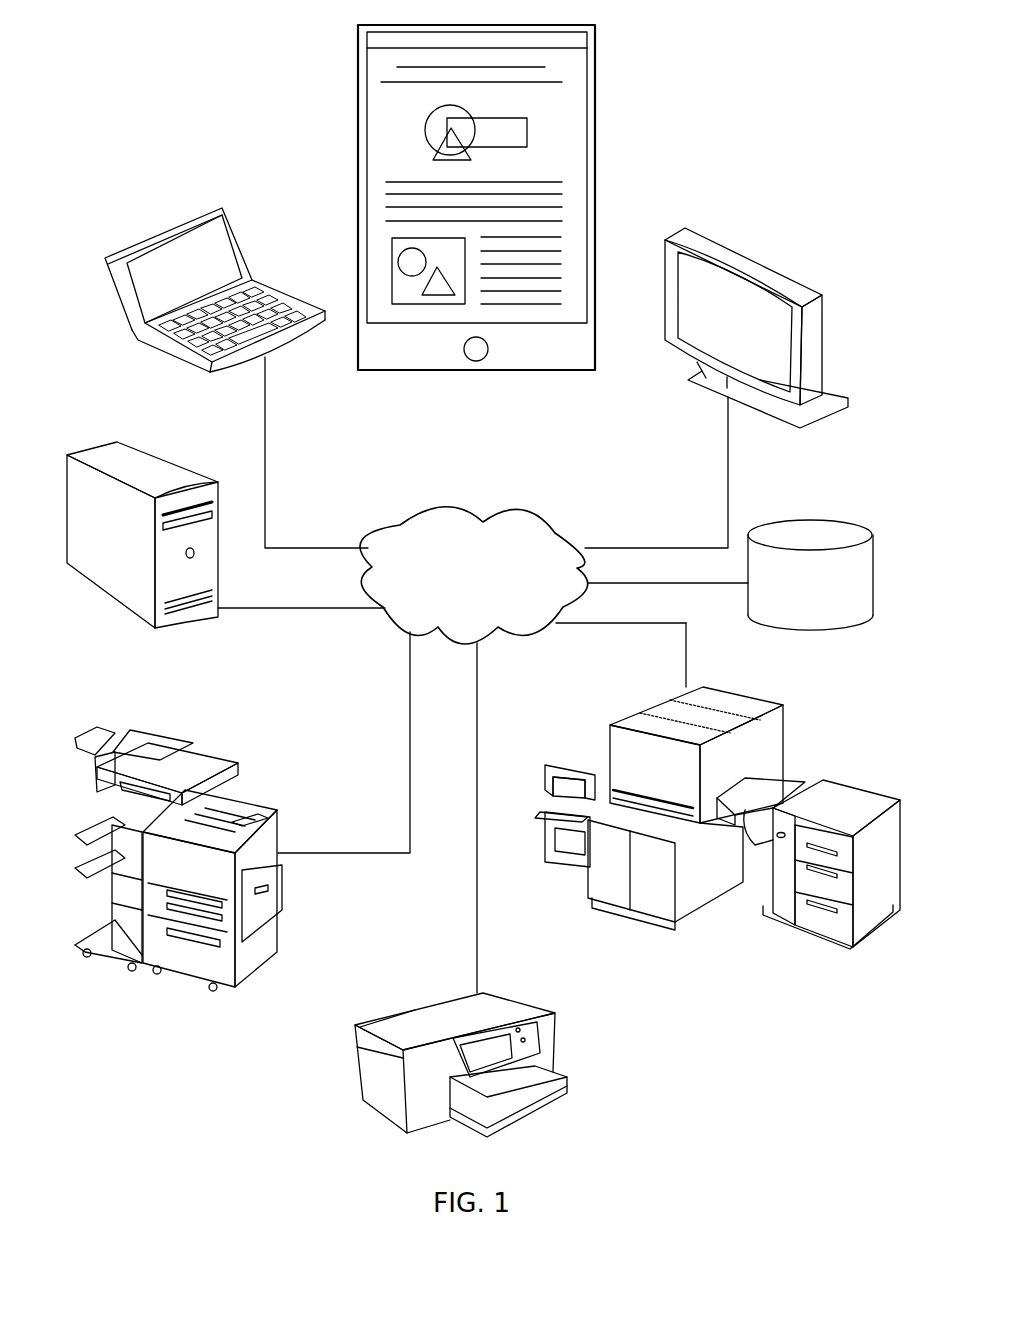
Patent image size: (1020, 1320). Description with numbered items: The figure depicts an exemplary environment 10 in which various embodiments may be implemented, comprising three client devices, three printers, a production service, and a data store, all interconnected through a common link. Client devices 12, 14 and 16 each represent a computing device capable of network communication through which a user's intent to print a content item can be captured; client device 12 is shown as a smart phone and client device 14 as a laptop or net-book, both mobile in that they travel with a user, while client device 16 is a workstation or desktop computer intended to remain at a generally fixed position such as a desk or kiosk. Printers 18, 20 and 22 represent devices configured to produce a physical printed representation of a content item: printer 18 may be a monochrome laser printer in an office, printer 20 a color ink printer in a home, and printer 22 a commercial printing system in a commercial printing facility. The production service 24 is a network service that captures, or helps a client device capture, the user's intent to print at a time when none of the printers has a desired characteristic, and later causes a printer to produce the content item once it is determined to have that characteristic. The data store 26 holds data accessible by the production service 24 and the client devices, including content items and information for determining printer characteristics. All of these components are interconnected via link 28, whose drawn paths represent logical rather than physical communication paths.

The environment 10 is at (136, 100).
The client device 12 is at (418, 371).
The client device 14 is at (222, 208).
The client device 16 is at (767, 257).
The printer 18 is at (222, 752).
The printer 20 is at (557, 1020).
The printer 22 is at (832, 792).
The production service 24 is at (150, 462).
The data store 26 is at (842, 525).
The link 28 is at (532, 513).